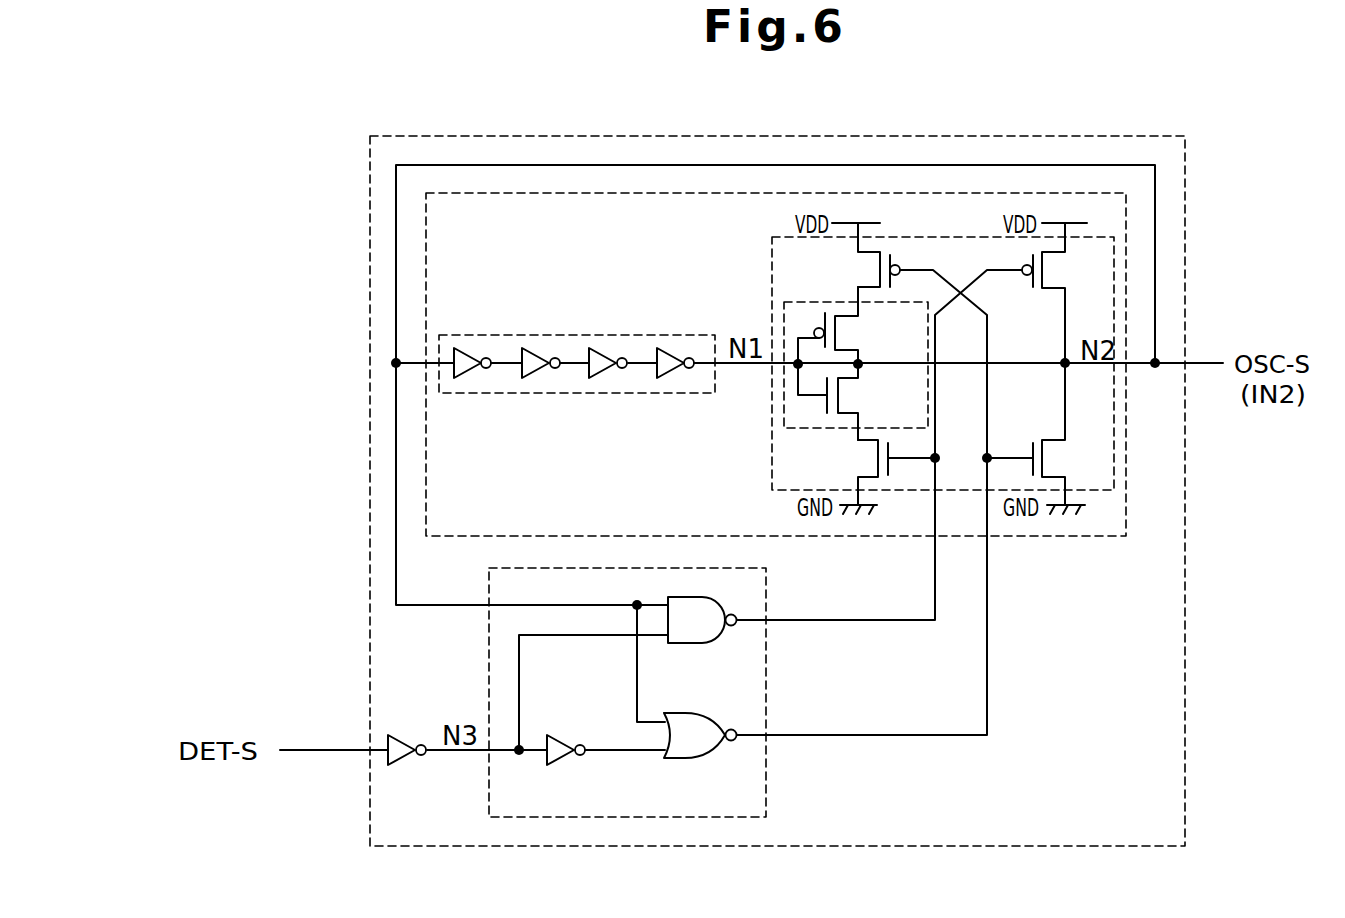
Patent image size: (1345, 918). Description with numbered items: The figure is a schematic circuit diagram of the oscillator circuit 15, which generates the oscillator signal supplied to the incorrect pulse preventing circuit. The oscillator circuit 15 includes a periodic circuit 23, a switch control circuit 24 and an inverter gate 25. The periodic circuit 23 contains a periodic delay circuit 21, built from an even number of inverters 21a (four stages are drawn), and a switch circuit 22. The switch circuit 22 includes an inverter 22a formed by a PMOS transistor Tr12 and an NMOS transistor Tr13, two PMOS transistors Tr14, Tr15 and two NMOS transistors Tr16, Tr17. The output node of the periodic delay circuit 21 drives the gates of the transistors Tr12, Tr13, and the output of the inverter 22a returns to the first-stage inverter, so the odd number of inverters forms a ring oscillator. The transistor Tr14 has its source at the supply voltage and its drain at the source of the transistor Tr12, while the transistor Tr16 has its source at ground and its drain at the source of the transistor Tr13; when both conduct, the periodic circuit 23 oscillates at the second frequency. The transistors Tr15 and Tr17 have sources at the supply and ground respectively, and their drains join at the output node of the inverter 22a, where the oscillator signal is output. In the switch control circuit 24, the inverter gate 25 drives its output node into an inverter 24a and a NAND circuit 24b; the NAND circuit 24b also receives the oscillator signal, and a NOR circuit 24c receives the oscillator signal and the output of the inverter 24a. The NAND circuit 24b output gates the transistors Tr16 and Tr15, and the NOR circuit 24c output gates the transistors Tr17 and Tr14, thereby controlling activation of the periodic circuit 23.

The oscillator circuit 15 is at (1185, 173).
The periodic delay circuit 21 is at (515, 394).
The inverter 21a is at (471, 348).
The switch circuit 22 is at (912, 237).
The inverter 22a is at (771, 412).
The periodic circuit 23 is at (1102, 538).
The switch control circuit 24 is at (488, 640).
The inverter 24a is at (568, 737).
The NAND circuit 24b is at (697, 644).
The NOR circuit 24c is at (713, 760).
The inverter gate 25 is at (408, 757).
The PMOS transistor Tr12 is at (847, 313).
The NMOS transistor Tr13 is at (847, 418).
The PMOS transistor Tr14 is at (870, 288).
The PMOS transistor Tr15 is at (1052, 290).
The NMOS transistor Tr16 is at (895, 418).
The NMOS transistor Tr17 is at (1053, 440).